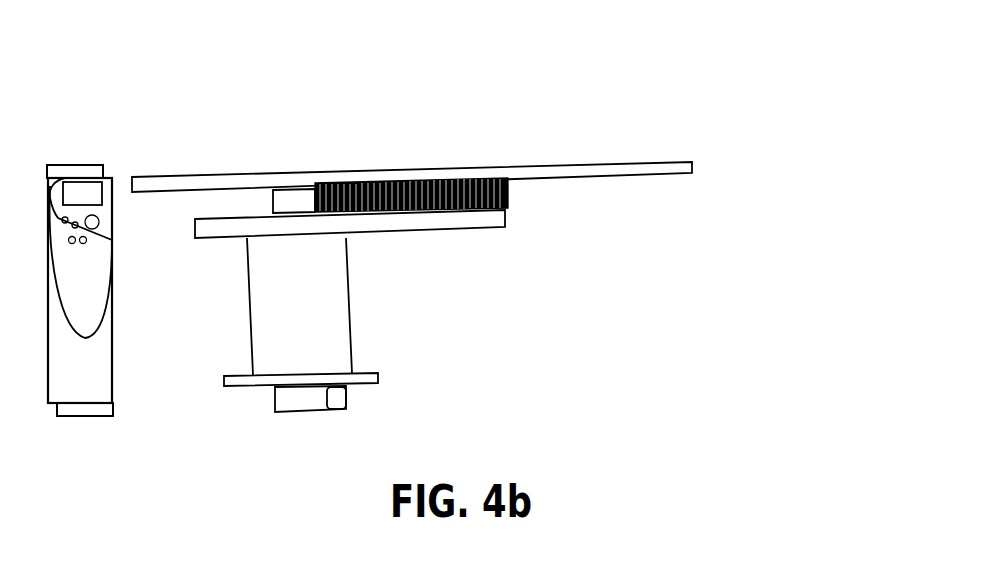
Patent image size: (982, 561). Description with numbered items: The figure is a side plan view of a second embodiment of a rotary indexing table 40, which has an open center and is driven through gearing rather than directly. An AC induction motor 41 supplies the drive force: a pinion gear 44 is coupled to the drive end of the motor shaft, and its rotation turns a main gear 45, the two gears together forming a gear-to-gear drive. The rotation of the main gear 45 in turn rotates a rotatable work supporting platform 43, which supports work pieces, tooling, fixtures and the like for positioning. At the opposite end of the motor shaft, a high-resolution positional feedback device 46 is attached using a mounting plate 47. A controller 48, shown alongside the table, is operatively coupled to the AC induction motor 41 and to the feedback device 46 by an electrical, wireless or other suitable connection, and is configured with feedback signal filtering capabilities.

The rotary indexing table 40 is at (821, 171).
The AC induction motor 41 is at (305, 313).
The rotatable work supporting platform 43 is at (663, 167).
The pinion gear 44 is at (273, 202).
The main gear 45 is at (510, 200).
The high-resolution positional feedback device 46 is at (300, 401).
The mounting plate 47 is at (367, 379).
The controller 48 is at (80, 170).